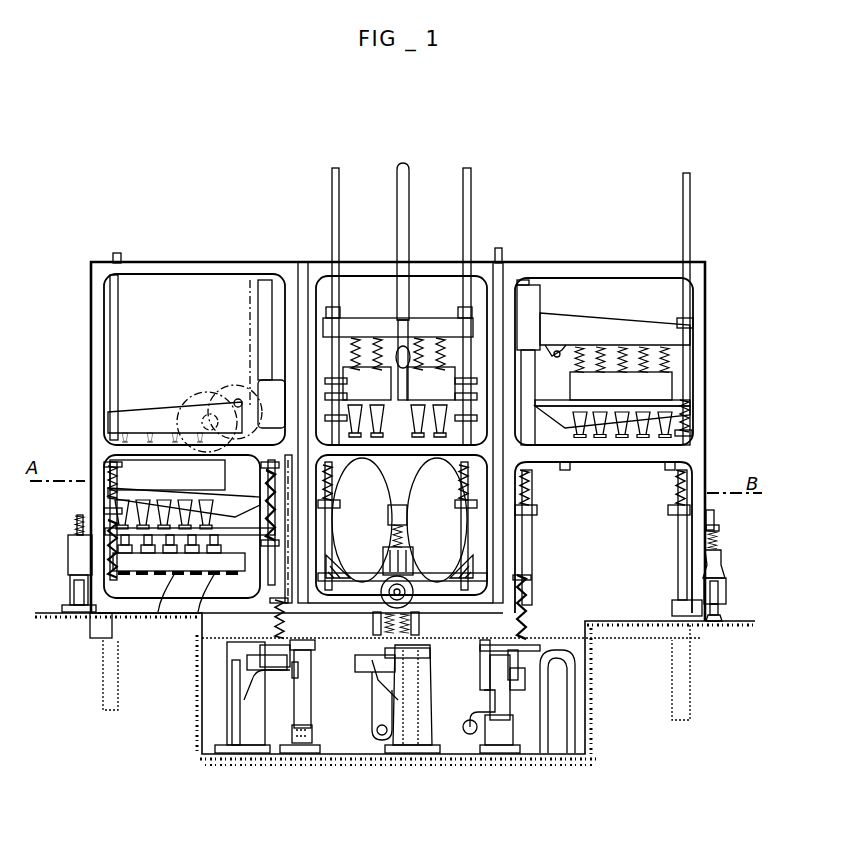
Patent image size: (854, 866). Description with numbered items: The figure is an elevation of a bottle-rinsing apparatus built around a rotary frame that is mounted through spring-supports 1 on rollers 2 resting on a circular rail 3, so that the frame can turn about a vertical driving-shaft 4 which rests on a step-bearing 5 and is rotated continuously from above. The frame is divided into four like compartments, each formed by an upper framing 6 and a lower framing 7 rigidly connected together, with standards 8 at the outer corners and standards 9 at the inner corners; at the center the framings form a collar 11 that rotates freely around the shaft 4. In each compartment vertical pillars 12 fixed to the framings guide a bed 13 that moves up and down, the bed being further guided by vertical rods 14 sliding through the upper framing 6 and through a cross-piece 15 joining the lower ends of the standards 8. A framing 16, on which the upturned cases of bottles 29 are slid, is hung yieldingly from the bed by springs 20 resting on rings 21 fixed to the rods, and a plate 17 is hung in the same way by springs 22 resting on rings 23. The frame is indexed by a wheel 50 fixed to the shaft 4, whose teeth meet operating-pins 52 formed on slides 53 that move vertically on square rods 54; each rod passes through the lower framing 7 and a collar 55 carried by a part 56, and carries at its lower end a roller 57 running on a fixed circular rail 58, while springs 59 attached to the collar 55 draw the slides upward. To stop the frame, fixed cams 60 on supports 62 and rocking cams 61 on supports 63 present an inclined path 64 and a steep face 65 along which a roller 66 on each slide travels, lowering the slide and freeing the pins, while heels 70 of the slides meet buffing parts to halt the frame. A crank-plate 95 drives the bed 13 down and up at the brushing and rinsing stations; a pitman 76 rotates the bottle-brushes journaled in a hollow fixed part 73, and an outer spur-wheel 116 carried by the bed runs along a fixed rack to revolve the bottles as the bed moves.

The spring-supports 1 is at (78, 521).
The rollers 2 is at (722, 597).
The circular rail 3 is at (719, 620).
The vertical driving-shaft 4 is at (409, 227).
The step-bearing 5 is at (368, 664).
The upper framing 6 is at (213, 271).
The lower framing 7 is at (628, 458).
The standards 8 is at (490, 400).
The standards 9 is at (514, 343).
The collar 11 is at (244, 346).
The vertical pillars 12 is at (528, 383).
The bed 13 is at (579, 324).
The vertical rods 14 is at (340, 237).
The cross-piece 15 is at (427, 600).
The framing 16 is at (561, 422).
The plate 17 is at (232, 530).
The springs 20 is at (692, 413).
The rings 21 is at (52, 510).
The springs 22 is at (536, 492).
The rings 23 is at (545, 512).
The cases of bottles 29 is at (580, 388).
The wheel 50 is at (460, 570).
The operating-pins 52 is at (302, 650).
The slides 53 is at (300, 670).
The square rods 54 is at (490, 678).
The collar 55 is at (420, 624).
The part 56 is at (310, 704).
The roller 57 is at (500, 722).
The fixed circular rail 58 is at (313, 733).
The springs 59 is at (530, 620).
The cams 60 is at (420, 645).
The cams 61 is at (240, 641).
The fixed supports 62 is at (553, 697).
The fixed supports 63 is at (231, 701).
The inclined path 64 is at (430, 657).
The steep face 65 is at (378, 656).
The roller 66 is at (368, 678).
The heels 70 is at (518, 690).
The fixed part 73 is at (231, 558).
The pitman 76 is at (218, 578).
The crank-plate 95 is at (446, 482).
The spur-wheel 116 is at (236, 398).